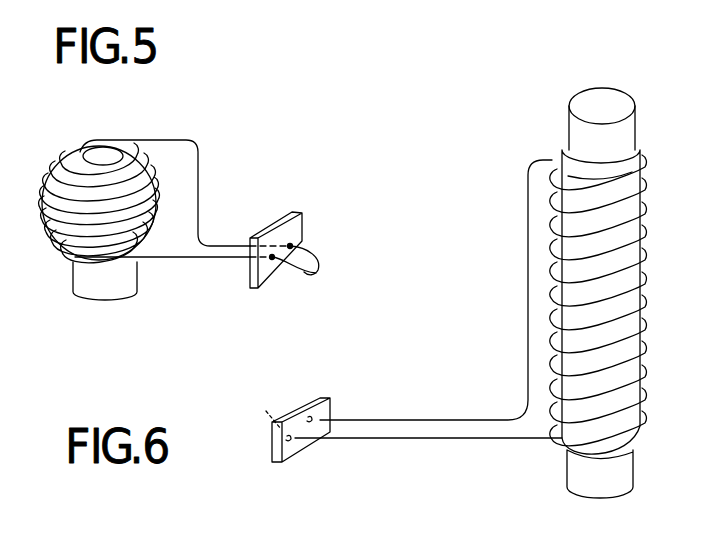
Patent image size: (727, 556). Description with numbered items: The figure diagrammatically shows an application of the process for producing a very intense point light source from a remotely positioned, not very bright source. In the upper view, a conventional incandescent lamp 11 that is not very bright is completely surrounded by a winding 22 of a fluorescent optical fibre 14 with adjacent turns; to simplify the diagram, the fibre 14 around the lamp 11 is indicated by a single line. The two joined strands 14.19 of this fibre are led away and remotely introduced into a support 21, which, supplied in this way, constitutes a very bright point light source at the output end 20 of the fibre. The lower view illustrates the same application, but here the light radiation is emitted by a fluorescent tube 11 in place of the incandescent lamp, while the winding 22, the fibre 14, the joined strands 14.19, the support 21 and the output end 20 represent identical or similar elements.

In FIG. 5, the incandescent lamp 11 is at (130, 270).
In FIG. 6, the incandescent lamp 11 is at (568, 281).
In FIG. 5, the fluorescent optical fibre 14 is at (150, 140).
In FIG. 6, the fluorescent optical fibre 14 is at (528, 170).
In FIG. 5, the joined strands of the fibre 14.19 is at (223, 232).
In FIG. 6, the joined strands of the fibre 14.19 is at (392, 383).
In FIG. 5, the output end of the fibre 20 is at (300, 278).
In FIG. 6, the output end of the fibre 20 is at (266, 411).
In FIG. 5, the support 21 is at (252, 275).
In FIG. 6, the support 21 is at (278, 462).
In FIG. 5, the winding 22 is at (49, 138).
In FIG. 6, the winding 22 is at (673, 199).